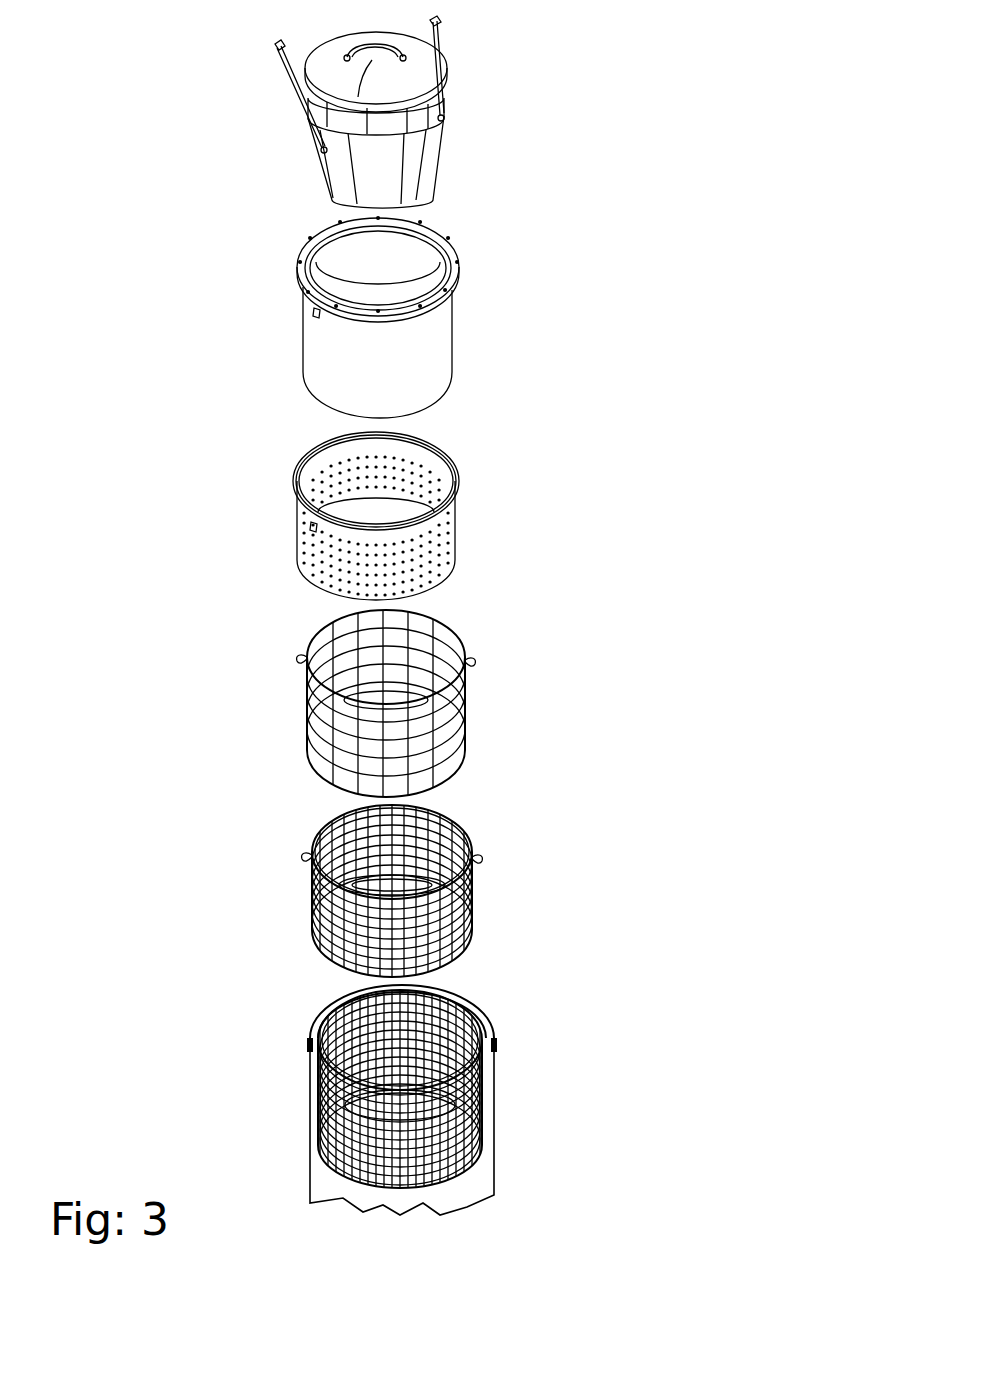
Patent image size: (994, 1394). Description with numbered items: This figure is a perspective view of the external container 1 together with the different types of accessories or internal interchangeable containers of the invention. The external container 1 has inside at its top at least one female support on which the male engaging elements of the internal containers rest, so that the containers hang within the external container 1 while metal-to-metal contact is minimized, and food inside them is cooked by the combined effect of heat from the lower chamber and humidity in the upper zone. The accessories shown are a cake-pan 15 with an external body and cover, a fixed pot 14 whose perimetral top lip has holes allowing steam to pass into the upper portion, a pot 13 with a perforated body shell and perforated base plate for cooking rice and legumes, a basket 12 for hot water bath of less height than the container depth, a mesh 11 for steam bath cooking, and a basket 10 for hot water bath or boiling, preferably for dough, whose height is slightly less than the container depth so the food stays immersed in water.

The external container 1 is at (493, 1090).
The basket 10 is at (493, 1040).
The mesh 11 is at (473, 902).
The basket 12 is at (463, 725).
The pot 13 is at (460, 537).
The fixed pot 14 is at (455, 338).
The cake-pan 15 is at (445, 130).